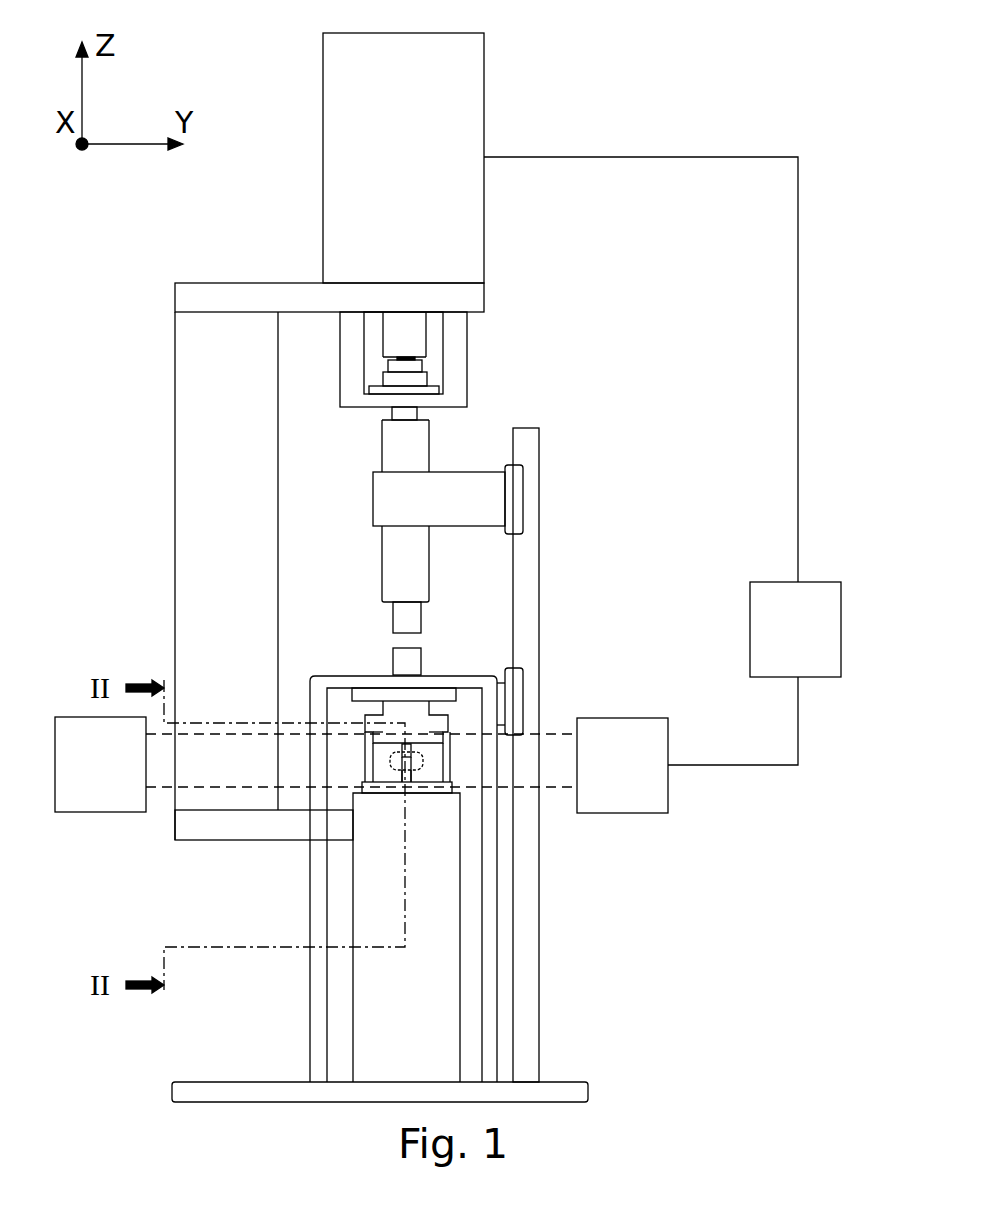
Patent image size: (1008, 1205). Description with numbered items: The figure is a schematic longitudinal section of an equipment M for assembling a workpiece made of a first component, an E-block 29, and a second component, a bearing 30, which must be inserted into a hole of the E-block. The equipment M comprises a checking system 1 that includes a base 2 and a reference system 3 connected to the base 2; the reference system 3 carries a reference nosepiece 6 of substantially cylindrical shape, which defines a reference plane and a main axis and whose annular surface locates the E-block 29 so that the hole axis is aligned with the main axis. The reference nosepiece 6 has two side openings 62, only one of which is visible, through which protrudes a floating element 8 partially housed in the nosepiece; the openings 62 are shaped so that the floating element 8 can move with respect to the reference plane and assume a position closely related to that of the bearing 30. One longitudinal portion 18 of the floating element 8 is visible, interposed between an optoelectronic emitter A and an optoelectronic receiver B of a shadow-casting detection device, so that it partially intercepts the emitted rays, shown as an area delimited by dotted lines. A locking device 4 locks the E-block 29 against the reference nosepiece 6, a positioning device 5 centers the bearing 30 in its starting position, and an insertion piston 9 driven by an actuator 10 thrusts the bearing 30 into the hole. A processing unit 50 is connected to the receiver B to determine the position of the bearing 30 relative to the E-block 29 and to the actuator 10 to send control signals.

The checking system 1 is at (592, 598).
The actuator 10 is at (462, 140).
The insertion device or piston 9 is at (403, 581).
The second component or bearing 30 is at (408, 667).
The locking device 4 is at (478, 686).
The positioning device 5 is at (375, 697).
The first component or E-block 29 is at (400, 716).
The reference nosepiece 6 is at (394, 778).
The base 2 is at (373, 798).
The side openings 62 is at (418, 765).
The floating element 8 is at (424, 779).
The longitudinal portion 18 is at (411, 780).
The reference system 3 is at (445, 757).
The processing unit 50 is at (801, 612).
The equipment M is at (702, 123).
The optoelectronic emitter A is at (106, 777).
The optoelectronic receiver B is at (633, 781).